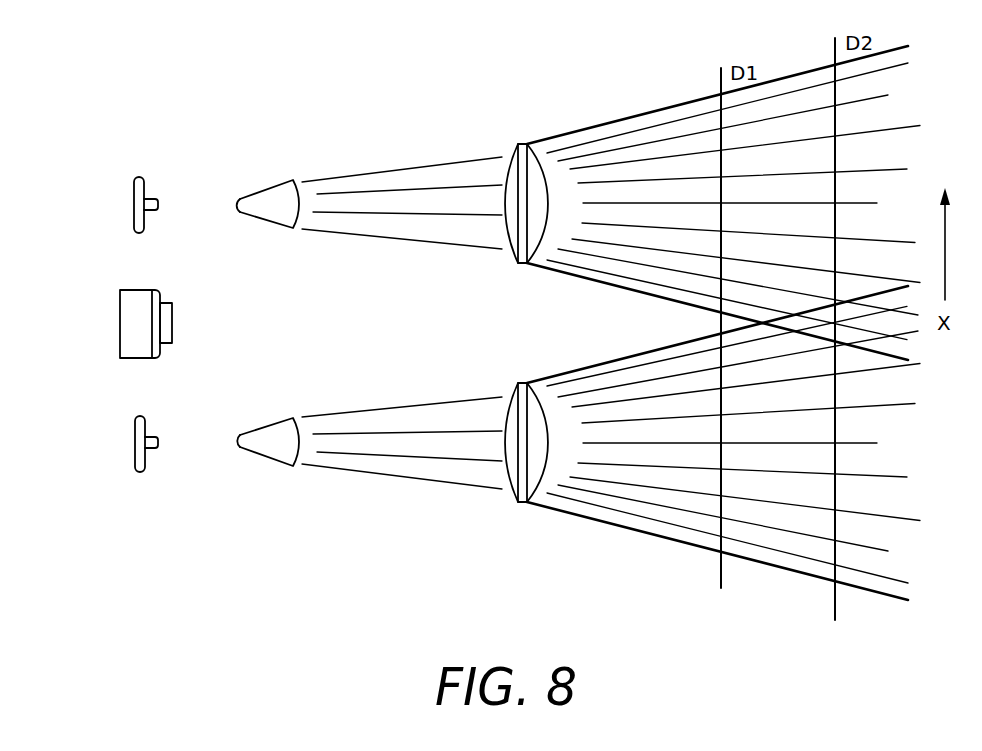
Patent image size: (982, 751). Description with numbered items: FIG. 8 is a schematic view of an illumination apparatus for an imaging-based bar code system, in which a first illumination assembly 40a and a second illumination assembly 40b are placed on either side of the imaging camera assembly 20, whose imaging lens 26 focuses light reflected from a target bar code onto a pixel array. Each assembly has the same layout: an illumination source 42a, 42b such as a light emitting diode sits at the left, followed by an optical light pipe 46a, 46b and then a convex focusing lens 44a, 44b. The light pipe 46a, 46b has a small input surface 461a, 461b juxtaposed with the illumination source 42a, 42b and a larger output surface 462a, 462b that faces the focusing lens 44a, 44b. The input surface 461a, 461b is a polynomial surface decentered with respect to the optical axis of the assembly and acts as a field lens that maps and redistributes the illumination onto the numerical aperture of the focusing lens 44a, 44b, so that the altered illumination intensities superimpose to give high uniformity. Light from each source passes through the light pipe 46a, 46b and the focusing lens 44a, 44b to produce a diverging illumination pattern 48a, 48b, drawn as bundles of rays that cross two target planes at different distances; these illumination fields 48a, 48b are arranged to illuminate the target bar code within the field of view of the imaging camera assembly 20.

The imaging camera assembly 20 is at (113, 294).
The imaging lens 26 is at (177, 325).
The first illumination assembly 40a is at (122, 95).
The second illumination assembly 40b is at (125, 545).
The illumination source 42a is at (158, 197).
The illumination source 42b is at (160, 433).
The focusing lens 44a is at (520, 137).
The focusing lens 44b is at (521, 379).
The optical light pipe 46a is at (262, 175).
The optical light pipe 46b is at (265, 414).
The illumination pattern 48a is at (628, 130).
The illumination pattern 48b is at (629, 520).
The input surface 461a is at (228, 208).
The input surface 461b is at (233, 440).
The output surface 462a is at (301, 187).
The output surface 462b is at (306, 420).